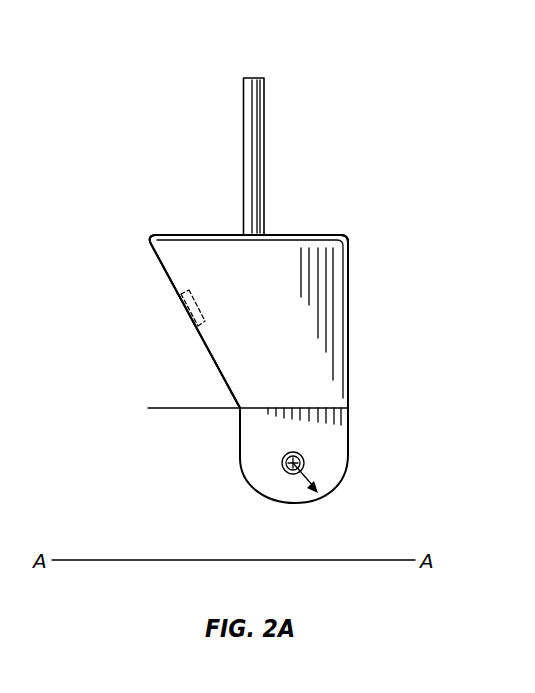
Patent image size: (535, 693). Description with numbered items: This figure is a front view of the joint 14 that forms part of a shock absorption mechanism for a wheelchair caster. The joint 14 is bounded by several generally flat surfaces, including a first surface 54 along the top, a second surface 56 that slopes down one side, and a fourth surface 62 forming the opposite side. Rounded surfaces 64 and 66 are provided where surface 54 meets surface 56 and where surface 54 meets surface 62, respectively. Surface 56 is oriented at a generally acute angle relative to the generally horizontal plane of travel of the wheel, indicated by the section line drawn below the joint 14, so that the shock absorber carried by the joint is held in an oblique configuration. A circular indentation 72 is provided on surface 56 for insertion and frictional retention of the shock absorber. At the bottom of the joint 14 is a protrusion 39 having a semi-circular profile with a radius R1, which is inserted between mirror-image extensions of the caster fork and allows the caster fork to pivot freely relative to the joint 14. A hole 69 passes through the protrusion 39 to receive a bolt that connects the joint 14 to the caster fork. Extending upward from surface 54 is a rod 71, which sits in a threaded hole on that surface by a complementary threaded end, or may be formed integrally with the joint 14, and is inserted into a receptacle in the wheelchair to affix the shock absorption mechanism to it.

The joint 14 is at (321, 55).
The rod 71 is at (266, 157).
The first generally flat surface 54 is at (168, 235).
The rounded surface 64 is at (147, 241).
The rounded surface 66 is at (350, 243).
The second generally flat surface 56 is at (158, 268).
The circular indentation 72 is at (182, 306).
The fourth generally flat surface 62 is at (351, 322).
The protrusion 39 is at (332, 462).
The hole 69 is at (282, 461).
The radius R1 is at (304, 466).